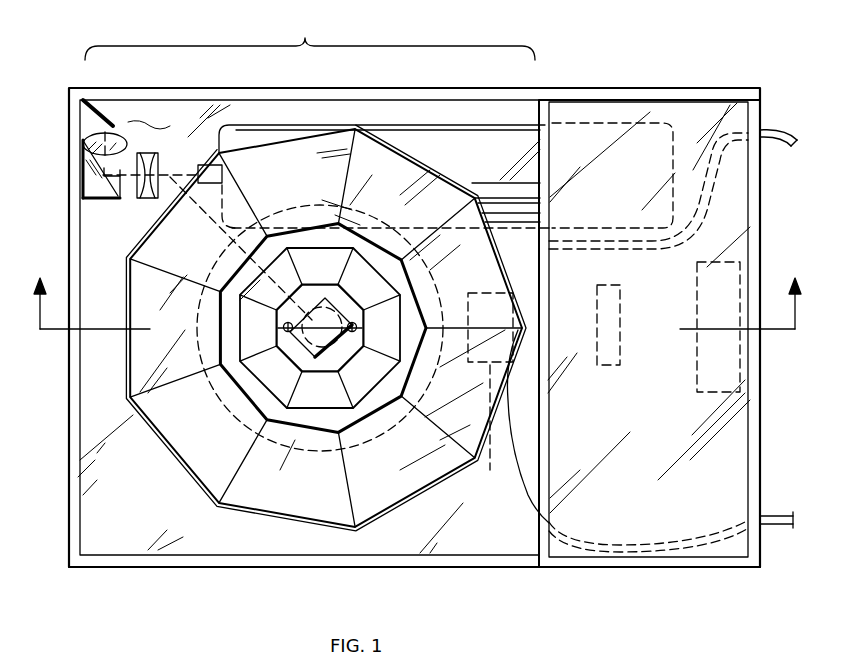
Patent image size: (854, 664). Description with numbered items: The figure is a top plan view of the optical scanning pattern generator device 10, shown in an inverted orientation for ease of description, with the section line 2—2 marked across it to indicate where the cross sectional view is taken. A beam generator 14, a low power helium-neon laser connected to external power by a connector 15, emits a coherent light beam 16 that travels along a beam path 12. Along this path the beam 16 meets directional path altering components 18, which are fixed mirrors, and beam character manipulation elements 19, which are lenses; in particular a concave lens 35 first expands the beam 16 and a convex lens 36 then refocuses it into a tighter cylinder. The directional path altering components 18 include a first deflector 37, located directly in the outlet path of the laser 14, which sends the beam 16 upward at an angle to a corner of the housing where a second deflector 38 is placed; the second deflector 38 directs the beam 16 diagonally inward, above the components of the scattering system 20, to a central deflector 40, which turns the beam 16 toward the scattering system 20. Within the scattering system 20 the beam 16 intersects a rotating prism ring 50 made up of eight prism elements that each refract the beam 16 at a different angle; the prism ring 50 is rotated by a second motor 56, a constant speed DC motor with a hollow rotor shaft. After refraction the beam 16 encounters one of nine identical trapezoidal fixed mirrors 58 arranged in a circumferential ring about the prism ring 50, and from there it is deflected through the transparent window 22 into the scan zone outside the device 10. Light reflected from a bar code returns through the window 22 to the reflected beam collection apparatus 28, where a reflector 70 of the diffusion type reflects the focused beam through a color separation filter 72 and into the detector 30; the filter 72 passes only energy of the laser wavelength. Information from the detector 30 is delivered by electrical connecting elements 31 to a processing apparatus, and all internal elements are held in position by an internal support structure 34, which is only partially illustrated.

The optical scanning pattern generator device 10 is at (614, 66).
The beam path 12 is at (130, 120).
The beam generator 14 is at (506, 176).
The connector 15 is at (780, 135).
The coherent light beam 16 is at (222, 236).
The directional path altering components 18 is at (83, 117).
The beam character manipulation elements 19 is at (150, 153).
The scattering system 20 is at (305, 38).
The transparent window 22 is at (142, 528).
The reflected beam collection apparatus 28 is at (755, 588).
The detector 30 is at (508, 408).
The electrical connecting elements 31 is at (783, 514).
The internal support structure 34 is at (232, 568).
The concave lens 35 is at (143, 200).
The convex lens 36 is at (83, 144).
The first deflector 37 is at (85, 200).
The second deflector 38 is at (100, 106).
The central deflector 40 is at (300, 363).
The rotating prism ring 50 is at (330, 398).
The second motor 56 is at (176, 488).
The fixed mirrors 58 is at (301, 186).
The reflector 70 is at (752, 384).
The color separation filter 72 is at (608, 368).
The section line 2— 2 is at (417, 293).